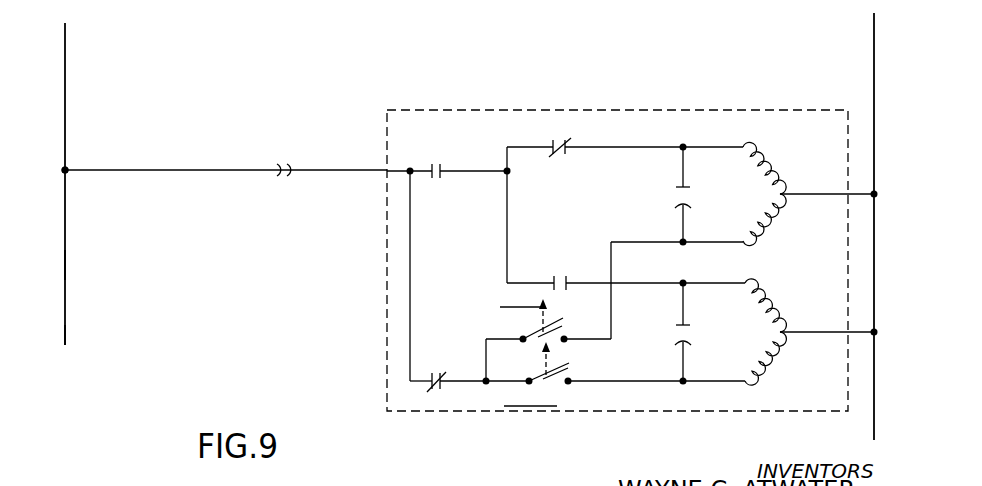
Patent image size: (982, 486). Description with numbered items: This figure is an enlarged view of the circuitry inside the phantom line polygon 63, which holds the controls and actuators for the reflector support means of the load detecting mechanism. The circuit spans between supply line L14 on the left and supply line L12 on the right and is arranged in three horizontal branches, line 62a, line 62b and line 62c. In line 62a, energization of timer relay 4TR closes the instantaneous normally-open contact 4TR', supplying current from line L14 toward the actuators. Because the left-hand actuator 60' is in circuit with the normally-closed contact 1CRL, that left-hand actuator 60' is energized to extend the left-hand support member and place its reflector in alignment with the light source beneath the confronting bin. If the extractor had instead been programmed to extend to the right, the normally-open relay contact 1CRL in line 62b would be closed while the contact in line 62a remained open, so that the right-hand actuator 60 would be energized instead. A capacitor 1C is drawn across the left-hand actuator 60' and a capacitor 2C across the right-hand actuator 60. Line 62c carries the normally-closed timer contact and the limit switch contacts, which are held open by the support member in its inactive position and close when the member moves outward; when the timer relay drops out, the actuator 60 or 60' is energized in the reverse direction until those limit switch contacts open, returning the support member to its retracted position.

The supply line L14 is at (65, 98).
The circuit line 62a is at (46, 174).
The circuit line 62b is at (44, 277).
The circuit line 62c is at (45, 350).
The phantom line polygon 63 is at (660, 108).
The instantaneous normally-open contact 4TR' is at (462, 159).
The relay contact 1CRL is at (626, 205).
The capacitor 1C is at (701, 194).
The capacitor 2C is at (699, 332).
The left-hand actuator 60' is at (775, 155).
The right-hand actuator 60 is at (777, 319).
The supply line L12 is at (874, 412).